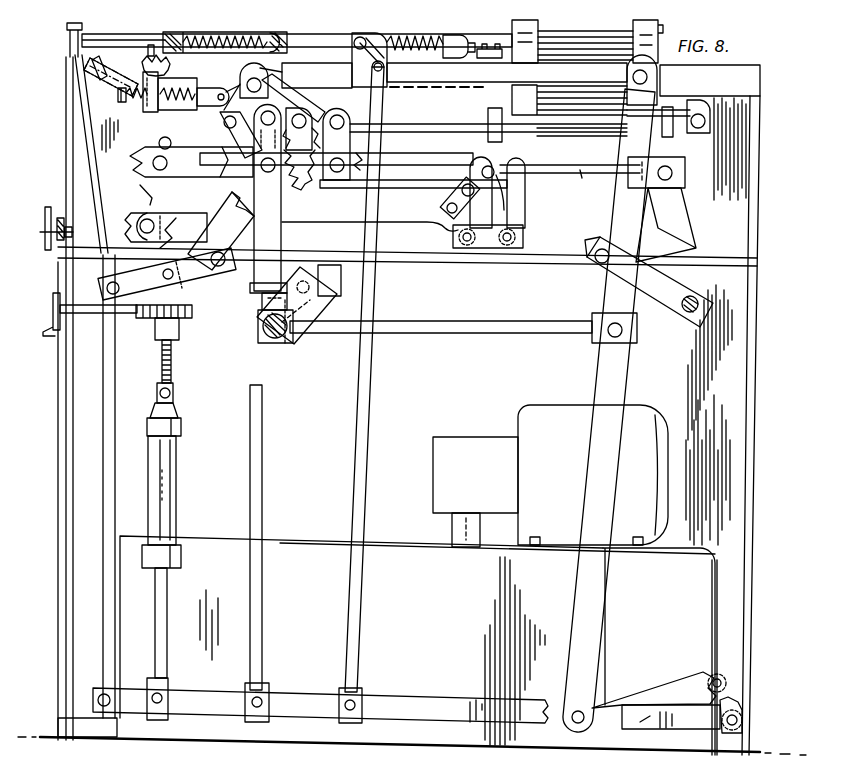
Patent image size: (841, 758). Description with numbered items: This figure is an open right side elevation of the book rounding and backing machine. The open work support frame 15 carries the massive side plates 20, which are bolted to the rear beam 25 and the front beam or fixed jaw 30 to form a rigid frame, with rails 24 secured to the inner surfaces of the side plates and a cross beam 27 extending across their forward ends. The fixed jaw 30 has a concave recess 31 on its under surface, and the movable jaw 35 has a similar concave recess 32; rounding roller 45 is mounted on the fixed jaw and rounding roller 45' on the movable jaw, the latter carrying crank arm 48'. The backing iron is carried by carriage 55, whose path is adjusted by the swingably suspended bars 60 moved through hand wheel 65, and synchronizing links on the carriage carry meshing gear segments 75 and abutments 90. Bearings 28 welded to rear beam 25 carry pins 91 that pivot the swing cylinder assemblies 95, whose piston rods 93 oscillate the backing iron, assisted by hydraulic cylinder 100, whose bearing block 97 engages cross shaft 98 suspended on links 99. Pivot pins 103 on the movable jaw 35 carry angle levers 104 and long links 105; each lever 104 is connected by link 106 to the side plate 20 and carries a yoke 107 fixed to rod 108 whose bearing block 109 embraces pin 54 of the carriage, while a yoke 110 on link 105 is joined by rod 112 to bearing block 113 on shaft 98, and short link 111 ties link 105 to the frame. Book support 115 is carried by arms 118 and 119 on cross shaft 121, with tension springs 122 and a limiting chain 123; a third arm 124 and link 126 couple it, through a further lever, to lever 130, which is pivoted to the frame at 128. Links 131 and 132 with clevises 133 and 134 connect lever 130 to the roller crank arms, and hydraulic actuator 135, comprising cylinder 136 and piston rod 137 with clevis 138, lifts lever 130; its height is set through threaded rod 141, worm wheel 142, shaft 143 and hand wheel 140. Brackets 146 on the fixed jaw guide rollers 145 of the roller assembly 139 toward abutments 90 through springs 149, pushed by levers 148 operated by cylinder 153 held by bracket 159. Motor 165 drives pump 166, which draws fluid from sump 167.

The work support frame 15 is at (53, 606).
The side plates 20 is at (735, 246).
The rails 24 is at (440, 124).
The rear beam 25 is at (742, 92).
The cross beam 27 is at (48, 206).
The bearings 28 is at (700, 118).
The front beam or fixed jaw 30 is at (274, 85).
The concave recess 31 is at (334, 58).
The concave recess 32 is at (360, 92).
The movable jaw 35 is at (448, 44).
The book clamping and rounding roller 45 is at (234, 31).
The rounding roller 45' is at (407, 28).
The crank arm 48' is at (455, 33).
The pin 54 is at (494, 172).
The carriage 55 is at (409, 155).
The adjusting bars 60 is at (428, 236).
The operating hand wheel 65 is at (40, 230).
The gear segments 75 is at (300, 190).
The abutment 90 is at (240, 134).
The pin 91 is at (705, 122).
The piston rod 93 is at (488, 128).
The swing cylinder assembly 95 is at (614, 158).
The bearing block 97 is at (262, 342).
The cross shaft 98 is at (276, 336).
The links 99 is at (326, 290).
The hydraulic cylinder 100 is at (284, 248).
The pivot pin 103 is at (660, 78).
The angle lever 104 is at (688, 220).
The link 105 is at (610, 374).
The link 106 is at (664, 314).
The yoke 107 is at (672, 180).
The rod 108 is at (574, 178).
The bearing block 109 is at (498, 190).
The yoke 110 is at (598, 316).
The short link 111 is at (664, 692).
The rod 112 is at (508, 324).
The bearing block 113 is at (314, 312).
The book support 115 is at (352, 38).
The arms 118 is at (232, 205).
The arms 119 is at (204, 270).
The cross shaft 121 is at (170, 282).
The tension spring 122 is at (170, 230).
The chain 123 is at (404, 92).
The third arm 124 is at (126, 278).
The link 126 is at (106, 448).
The pivot 128 is at (740, 716).
The lever 130 is at (442, 702).
The link 131 is at (266, 488).
The link 132 is at (360, 460).
The clevis 133 is at (270, 690).
The clevis 134 is at (360, 690).
The hydraulic actuator 135 is at (192, 488).
The cylinder 136 is at (158, 486).
The piston rod 137 is at (162, 604).
The clevis 138 is at (168, 690).
The roller assembly member 139 is at (212, 106).
The hand wheel 140 is at (52, 302).
The threaded rod 141 is at (172, 382).
The worm wheel 142 is at (188, 344).
The shaft 143 is at (130, 318).
The rollers 145 is at (228, 90).
The brackets 146 is at (146, 108).
The levers 148 is at (164, 78).
The heavy springs 149 is at (150, 146).
The cylinder 153 is at (96, 84).
The bracket 159 is at (86, 146).
The motor 165 is at (574, 480).
The pump 166 is at (506, 446).
The sump 167 is at (416, 534).